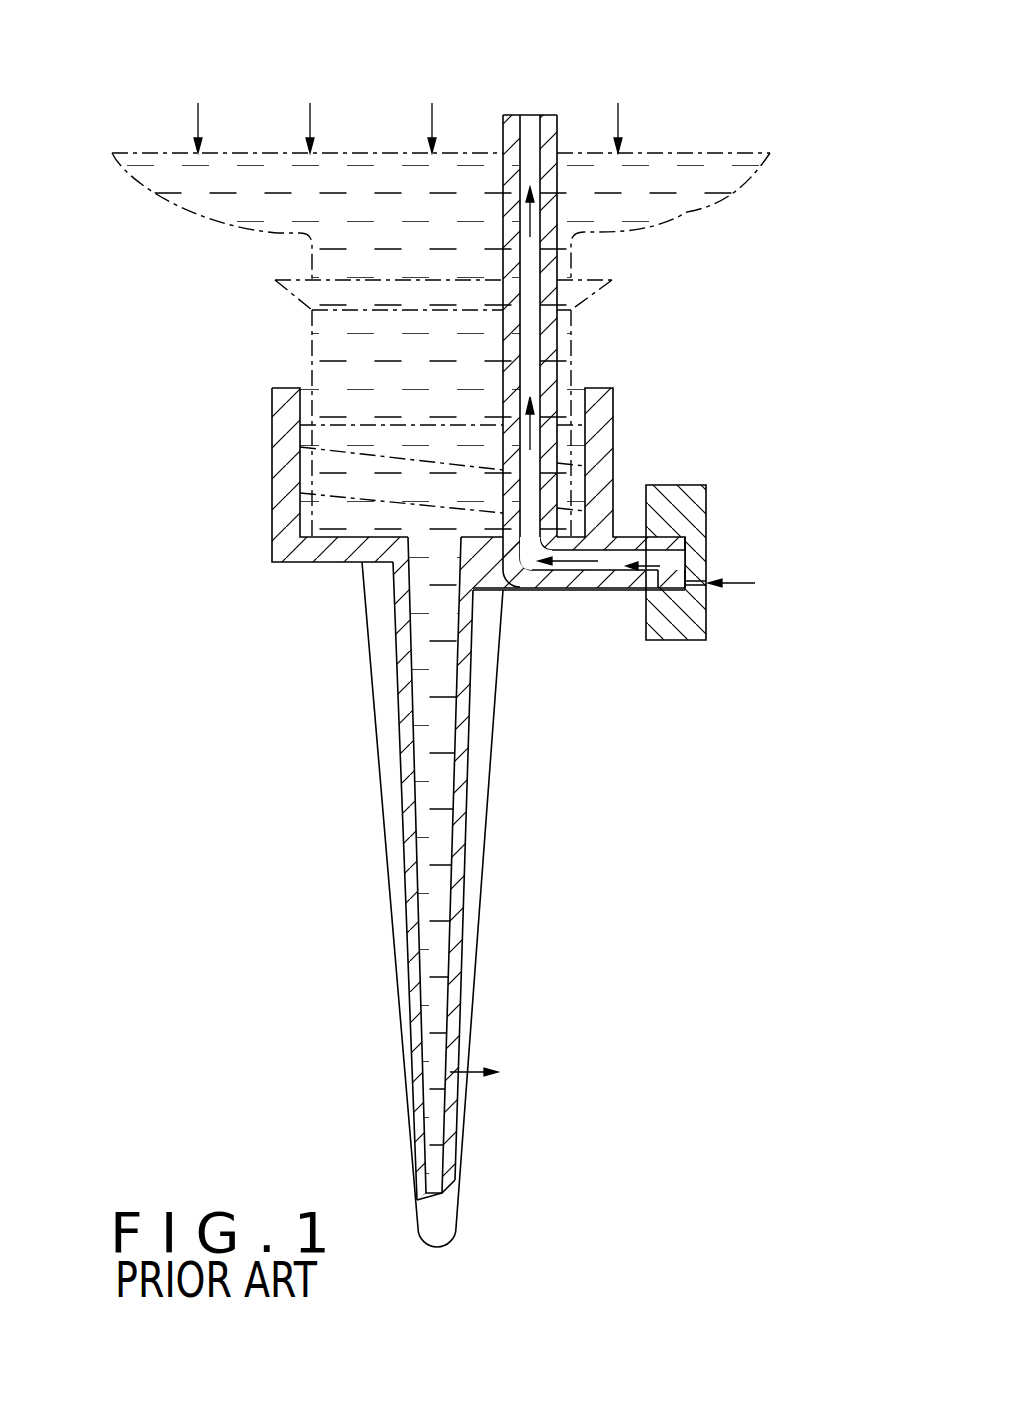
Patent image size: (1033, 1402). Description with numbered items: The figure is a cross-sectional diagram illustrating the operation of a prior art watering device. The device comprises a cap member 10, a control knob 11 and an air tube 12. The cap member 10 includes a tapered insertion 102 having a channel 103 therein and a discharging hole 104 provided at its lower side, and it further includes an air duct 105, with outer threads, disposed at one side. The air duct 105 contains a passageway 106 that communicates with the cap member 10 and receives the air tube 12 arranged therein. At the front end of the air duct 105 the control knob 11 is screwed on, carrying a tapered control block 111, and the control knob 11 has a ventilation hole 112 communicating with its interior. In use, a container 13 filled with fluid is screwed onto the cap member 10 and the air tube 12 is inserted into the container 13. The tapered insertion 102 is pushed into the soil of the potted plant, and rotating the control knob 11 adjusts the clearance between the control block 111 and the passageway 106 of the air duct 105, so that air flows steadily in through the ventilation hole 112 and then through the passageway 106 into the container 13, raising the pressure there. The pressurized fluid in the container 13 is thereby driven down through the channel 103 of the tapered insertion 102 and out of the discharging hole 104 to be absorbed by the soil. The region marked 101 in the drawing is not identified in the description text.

The cap member 10 is at (256, 462).
The liquid chamber 101 is at (335, 427).
The tapered insertion 102 is at (383, 648).
The channel 103 is at (435, 737).
The discharging hole 104 is at (452, 1063).
The air duct 105 is at (622, 583).
The passageway 106 is at (598, 565).
The control knob 11 is at (705, 500).
The tapered control block 111 is at (668, 560).
The ventilation hole 112 is at (706, 590).
The air tube 12 is at (558, 130).
The container 13 is at (687, 212).